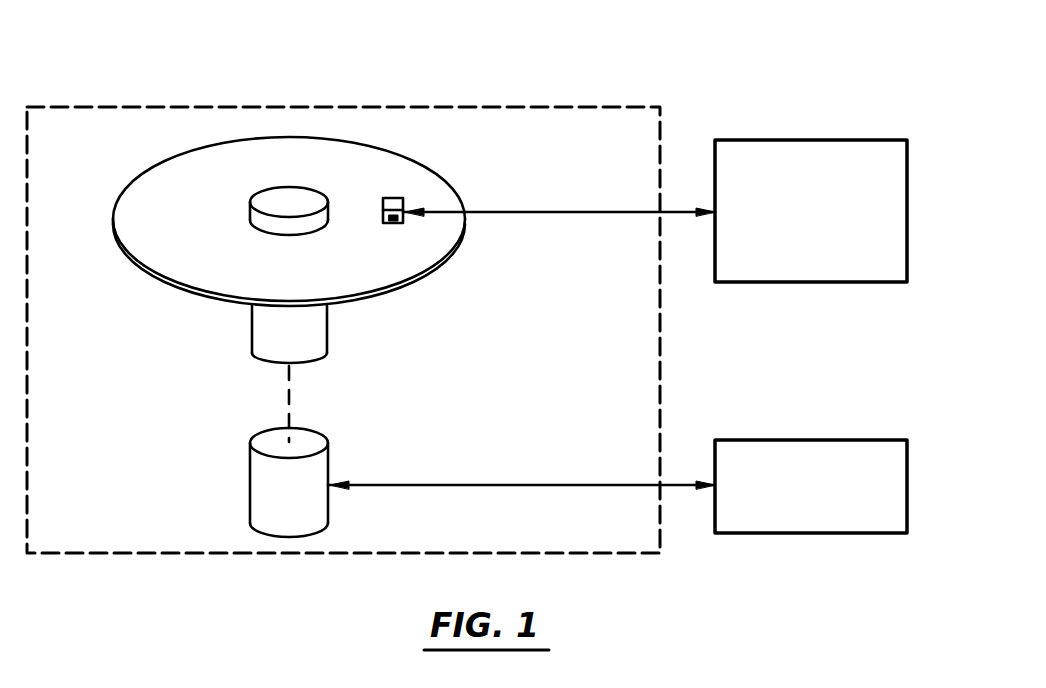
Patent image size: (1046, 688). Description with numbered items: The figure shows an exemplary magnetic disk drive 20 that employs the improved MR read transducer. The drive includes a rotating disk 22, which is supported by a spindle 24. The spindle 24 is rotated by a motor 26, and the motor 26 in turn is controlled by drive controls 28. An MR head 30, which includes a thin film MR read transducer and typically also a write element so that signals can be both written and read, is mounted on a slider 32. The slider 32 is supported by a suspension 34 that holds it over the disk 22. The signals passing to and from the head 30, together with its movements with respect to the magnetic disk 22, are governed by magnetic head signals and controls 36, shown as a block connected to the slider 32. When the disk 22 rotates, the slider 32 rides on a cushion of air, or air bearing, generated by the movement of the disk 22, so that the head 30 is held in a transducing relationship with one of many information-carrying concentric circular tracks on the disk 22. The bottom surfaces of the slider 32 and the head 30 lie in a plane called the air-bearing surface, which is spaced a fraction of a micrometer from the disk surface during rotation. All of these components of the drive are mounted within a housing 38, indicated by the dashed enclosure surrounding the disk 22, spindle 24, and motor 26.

The magnetic disk drive 20 is at (535, 80).
The rotating disk 22 is at (155, 182).
The spindle 24 is at (252, 333).
The motor 26 is at (250, 487).
The drive controls 28 is at (807, 440).
The MR head 30 is at (400, 223).
The slider 32 is at (396, 198).
The suspension 34 is at (553, 213).
The magnetic head signals and controls 36 is at (811, 140).
The housing 38 is at (660, 369).